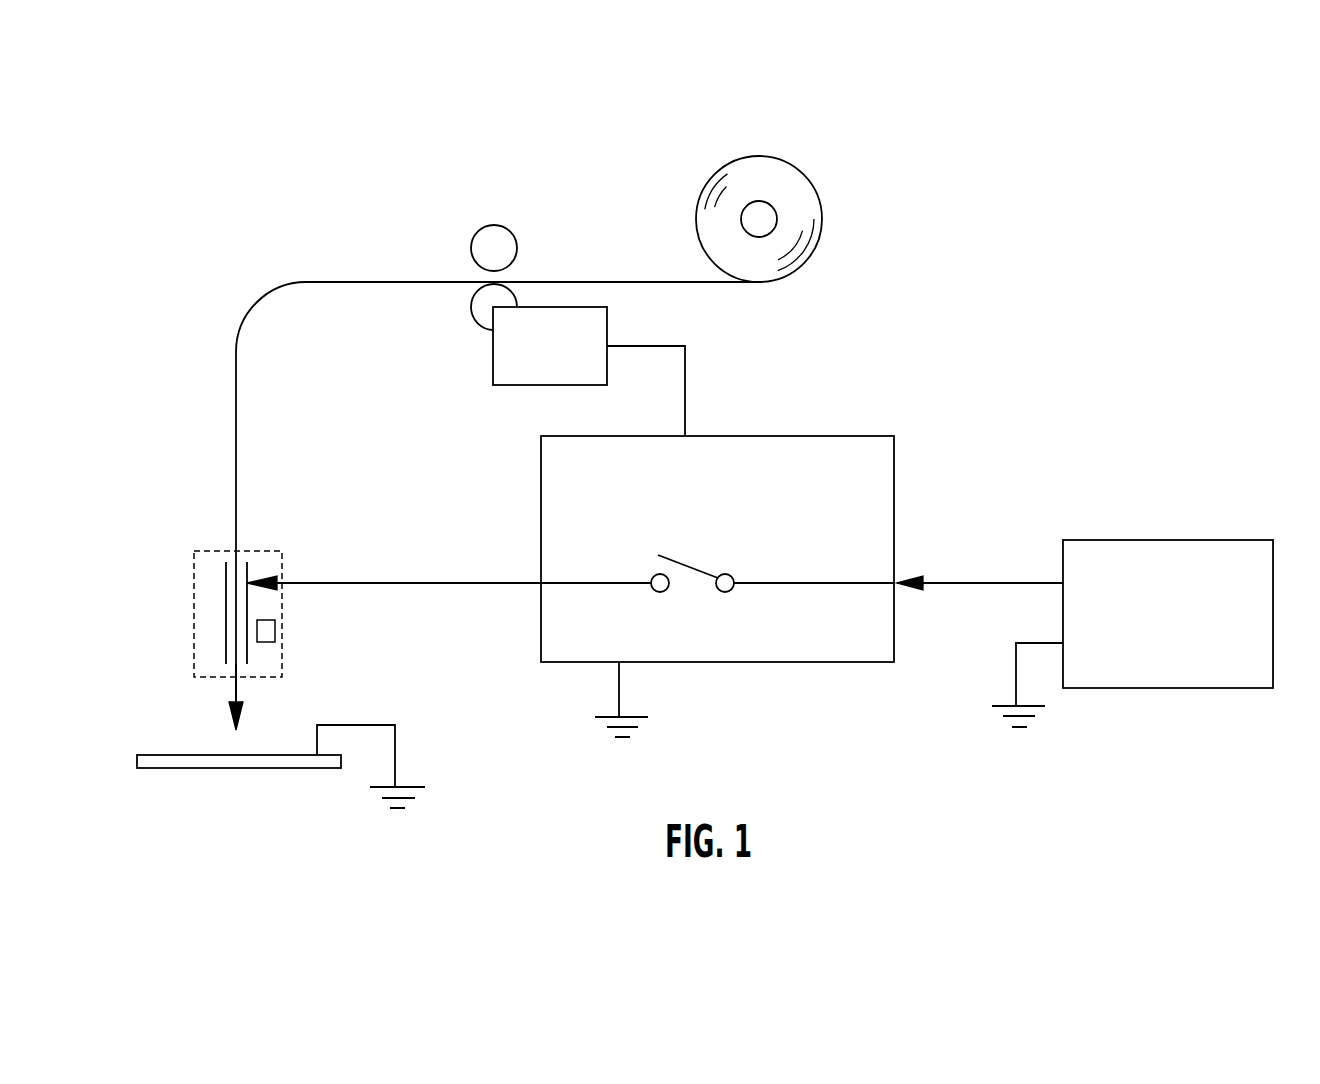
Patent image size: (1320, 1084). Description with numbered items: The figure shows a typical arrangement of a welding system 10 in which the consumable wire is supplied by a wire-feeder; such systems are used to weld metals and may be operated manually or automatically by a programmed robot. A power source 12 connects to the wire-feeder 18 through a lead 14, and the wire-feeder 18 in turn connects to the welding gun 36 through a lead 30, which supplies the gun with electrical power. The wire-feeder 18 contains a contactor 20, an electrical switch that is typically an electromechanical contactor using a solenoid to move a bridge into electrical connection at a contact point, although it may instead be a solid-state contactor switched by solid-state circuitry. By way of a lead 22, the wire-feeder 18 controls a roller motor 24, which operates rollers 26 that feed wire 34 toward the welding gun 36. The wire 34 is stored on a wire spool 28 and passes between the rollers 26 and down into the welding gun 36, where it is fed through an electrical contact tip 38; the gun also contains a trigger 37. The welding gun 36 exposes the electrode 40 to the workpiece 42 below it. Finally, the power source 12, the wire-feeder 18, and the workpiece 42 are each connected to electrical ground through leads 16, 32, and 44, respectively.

The welding system 10 is at (236, 278).
The power source 12 is at (1135, 540).
The lead 14 is at (942, 583).
The lead 16 is at (1016, 682).
The wire-feeder 18 is at (777, 436).
The contactor 20 is at (683, 565).
The lead 22 is at (685, 364).
The roller motor 24 is at (493, 358).
The rollers 26 is at (489, 232).
The wire spool 28 is at (795, 162).
The lead 30 is at (449, 582).
The lead 32 is at (619, 688).
The wire 34 is at (236, 503).
The welding gun 36 is at (194, 582).
The trigger 37 is at (275, 622).
The electrical contact tip 38 is at (226, 638).
The electrode 40 is at (233, 725).
The workpiece 42 is at (180, 770).
The lead 44 is at (360, 725).